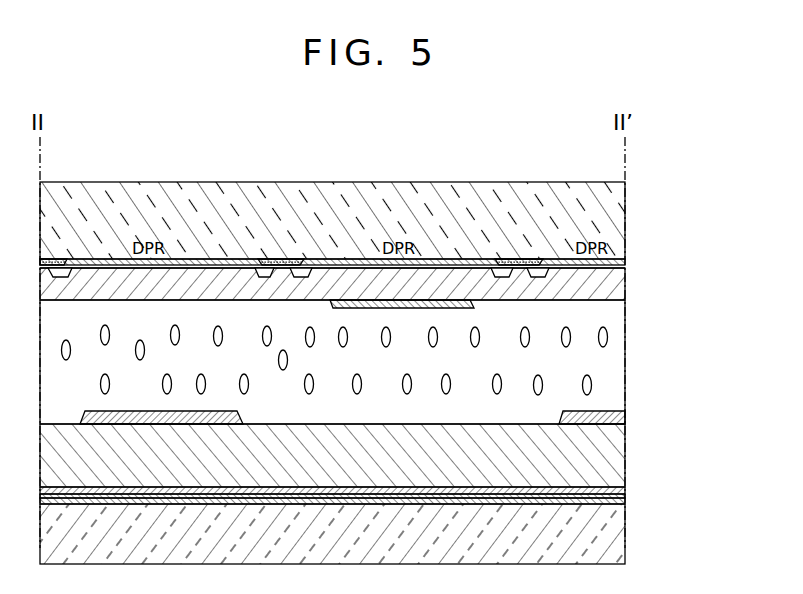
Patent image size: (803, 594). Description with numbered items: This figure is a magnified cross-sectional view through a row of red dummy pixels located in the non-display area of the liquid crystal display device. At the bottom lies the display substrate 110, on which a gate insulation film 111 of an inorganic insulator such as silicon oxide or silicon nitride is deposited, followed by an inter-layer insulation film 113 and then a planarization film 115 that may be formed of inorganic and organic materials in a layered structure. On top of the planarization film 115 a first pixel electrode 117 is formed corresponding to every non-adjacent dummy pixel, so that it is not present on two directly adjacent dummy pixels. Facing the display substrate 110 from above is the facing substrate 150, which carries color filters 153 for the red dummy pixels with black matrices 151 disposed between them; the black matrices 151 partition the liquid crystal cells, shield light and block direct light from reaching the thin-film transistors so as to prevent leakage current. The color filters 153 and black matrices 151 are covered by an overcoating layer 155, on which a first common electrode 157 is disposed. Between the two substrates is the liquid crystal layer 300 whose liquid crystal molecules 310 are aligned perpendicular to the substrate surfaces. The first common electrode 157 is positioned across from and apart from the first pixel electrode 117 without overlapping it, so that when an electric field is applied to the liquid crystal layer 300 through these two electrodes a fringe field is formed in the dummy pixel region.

The facing substrate 150 is at (617, 214).
The color filters 153 is at (621, 268).
The black matrices 151 is at (527, 268).
The overcoating layer 155 is at (618, 292).
The first common electrode 157 is at (452, 300).
The liquid crystal layer 300 is at (619, 361).
The liquid crystal molecules 310 is at (594, 386).
The first pixel electrode 117 is at (619, 418).
The planarization film 115 is at (619, 447).
The inter-layer insulation film 113 is at (620, 490).
The gate insulation film 111 is at (620, 498).
The display substrate 110 is at (618, 538).